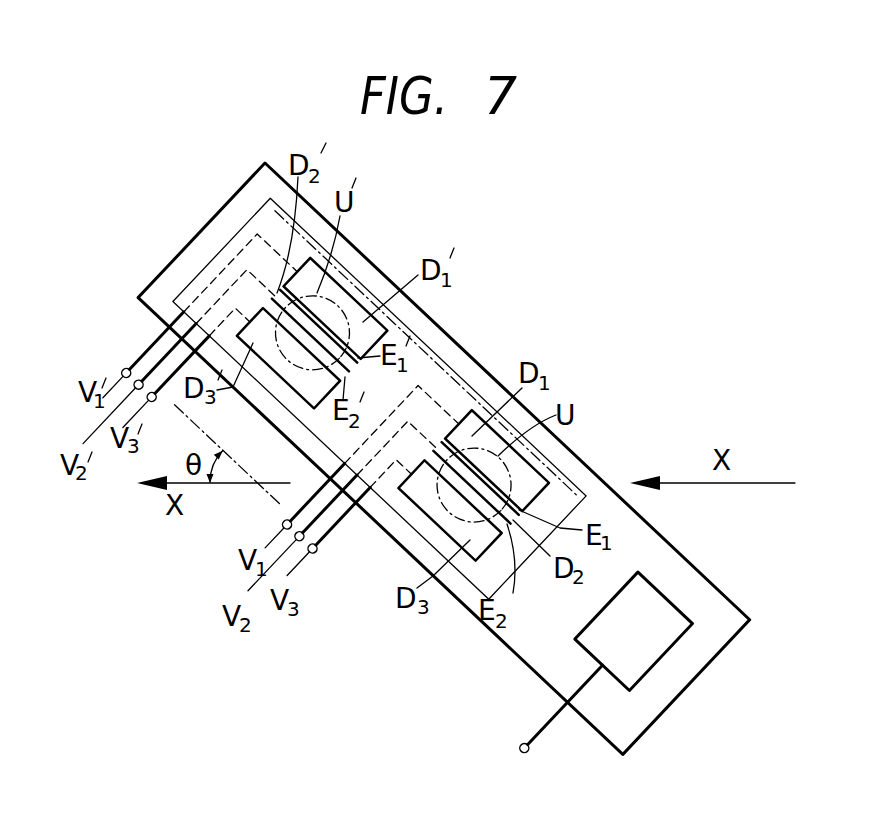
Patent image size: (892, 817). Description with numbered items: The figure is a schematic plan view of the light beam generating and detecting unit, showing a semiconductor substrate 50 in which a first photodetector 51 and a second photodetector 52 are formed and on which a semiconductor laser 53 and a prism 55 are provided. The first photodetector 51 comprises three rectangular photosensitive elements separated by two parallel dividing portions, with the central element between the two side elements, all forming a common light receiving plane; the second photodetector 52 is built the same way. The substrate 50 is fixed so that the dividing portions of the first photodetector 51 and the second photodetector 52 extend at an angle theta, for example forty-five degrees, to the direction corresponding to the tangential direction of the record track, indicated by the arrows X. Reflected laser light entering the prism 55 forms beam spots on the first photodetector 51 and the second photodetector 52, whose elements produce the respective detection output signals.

The semiconductor substrate 50 is at (688, 572).
The first photodetector 51 is at (547, 462).
The second photodetector 52 is at (358, 283).
The semiconductor laser 53 is at (668, 653).
The prism 55 is at (430, 342).